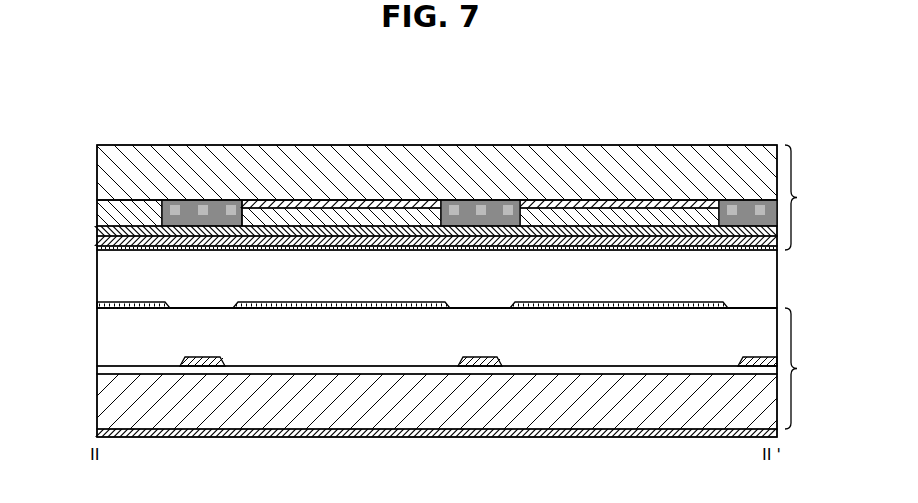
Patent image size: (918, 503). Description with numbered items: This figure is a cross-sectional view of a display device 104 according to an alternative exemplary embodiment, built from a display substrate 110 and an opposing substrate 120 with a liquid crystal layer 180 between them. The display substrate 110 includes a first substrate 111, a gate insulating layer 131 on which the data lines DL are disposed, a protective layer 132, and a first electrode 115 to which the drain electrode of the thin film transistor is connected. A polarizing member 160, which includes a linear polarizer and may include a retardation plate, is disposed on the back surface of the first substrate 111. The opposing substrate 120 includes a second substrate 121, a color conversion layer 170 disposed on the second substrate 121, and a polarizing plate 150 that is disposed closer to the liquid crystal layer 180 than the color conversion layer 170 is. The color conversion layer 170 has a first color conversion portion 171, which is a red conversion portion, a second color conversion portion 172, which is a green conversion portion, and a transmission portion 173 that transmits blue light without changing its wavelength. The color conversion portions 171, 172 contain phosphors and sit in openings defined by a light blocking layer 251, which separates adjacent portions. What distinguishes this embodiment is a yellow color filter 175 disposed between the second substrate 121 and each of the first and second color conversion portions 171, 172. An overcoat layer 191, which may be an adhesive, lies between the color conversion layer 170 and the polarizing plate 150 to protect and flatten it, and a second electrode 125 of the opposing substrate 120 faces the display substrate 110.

The display device 104 is at (110, 93).
The display substrate 110 is at (808, 368).
The first substrate 111 is at (105, 404).
The first electrode 115 is at (115, 305).
The opposing substrate 120 is at (808, 197).
The second substrate 121 is at (465, 175).
The second electrode 125 is at (97, 248).
The gate insulating layer 131 is at (105, 370).
The protective layer 132 is at (105, 337).
The polarizing plate 150 is at (97, 240).
The polarizing member 160 is at (100, 433).
The color conversion layer 170 is at (88, 208).
The first color conversion portion 171 is at (305, 217).
The second color conversion portion 172 is at (599, 217).
The transmission portion 173 is at (128, 210).
The yellow color filter 175 is at (353, 204).
The liquid crystal layer 180 is at (105, 280).
The overcoat layer 191 is at (97, 231).
The light blocking layer 251 is at (203, 210).
The data line DL is at (203, 364).